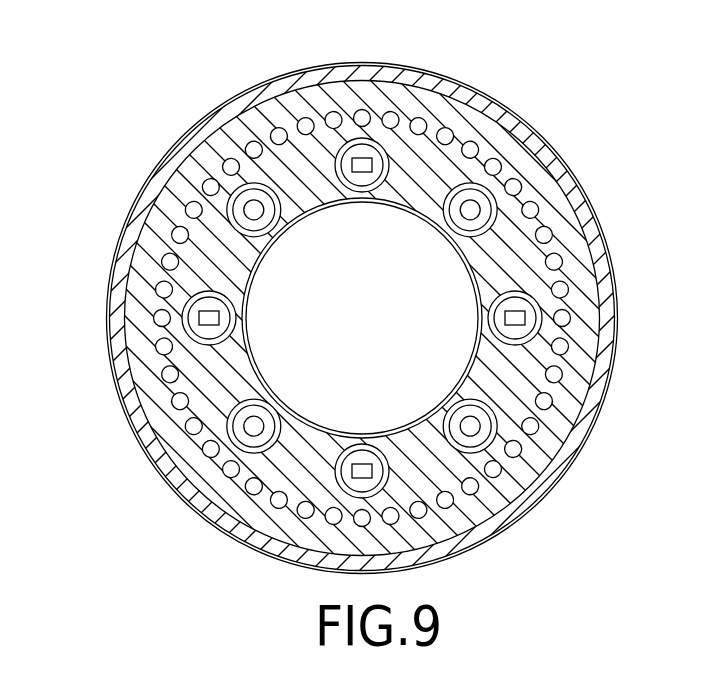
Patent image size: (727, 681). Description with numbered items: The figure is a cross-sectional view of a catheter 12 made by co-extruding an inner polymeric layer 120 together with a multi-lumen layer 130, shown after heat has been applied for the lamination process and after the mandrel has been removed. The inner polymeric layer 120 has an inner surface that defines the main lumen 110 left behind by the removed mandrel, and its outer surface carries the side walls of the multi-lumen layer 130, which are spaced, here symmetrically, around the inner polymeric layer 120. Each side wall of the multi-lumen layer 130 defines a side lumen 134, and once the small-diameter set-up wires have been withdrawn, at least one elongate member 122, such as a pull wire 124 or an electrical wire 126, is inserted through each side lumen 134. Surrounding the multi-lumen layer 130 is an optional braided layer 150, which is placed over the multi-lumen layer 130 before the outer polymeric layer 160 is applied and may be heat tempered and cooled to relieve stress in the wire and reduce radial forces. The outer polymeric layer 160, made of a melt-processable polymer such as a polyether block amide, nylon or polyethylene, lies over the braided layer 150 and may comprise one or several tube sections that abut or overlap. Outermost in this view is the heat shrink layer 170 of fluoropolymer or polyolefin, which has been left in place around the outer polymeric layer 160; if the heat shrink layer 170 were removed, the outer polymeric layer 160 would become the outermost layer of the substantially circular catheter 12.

The catheter 12 is at (168, 60).
The main lumen 110 is at (373, 314).
The inner polymeric layer 120 is at (378, 197).
The elongate member 122 is at (281, 286).
The pull wire 124 is at (202, 322).
The electrical wire 126 is at (253, 210).
The multi-lumen layer 130 is at (383, 468).
The side lumen 134 is at (492, 198).
The braided layer 150 is at (562, 318).
The outer polymeric layer 160 is at (587, 384).
The heat shrink layer 170 is at (553, 475).